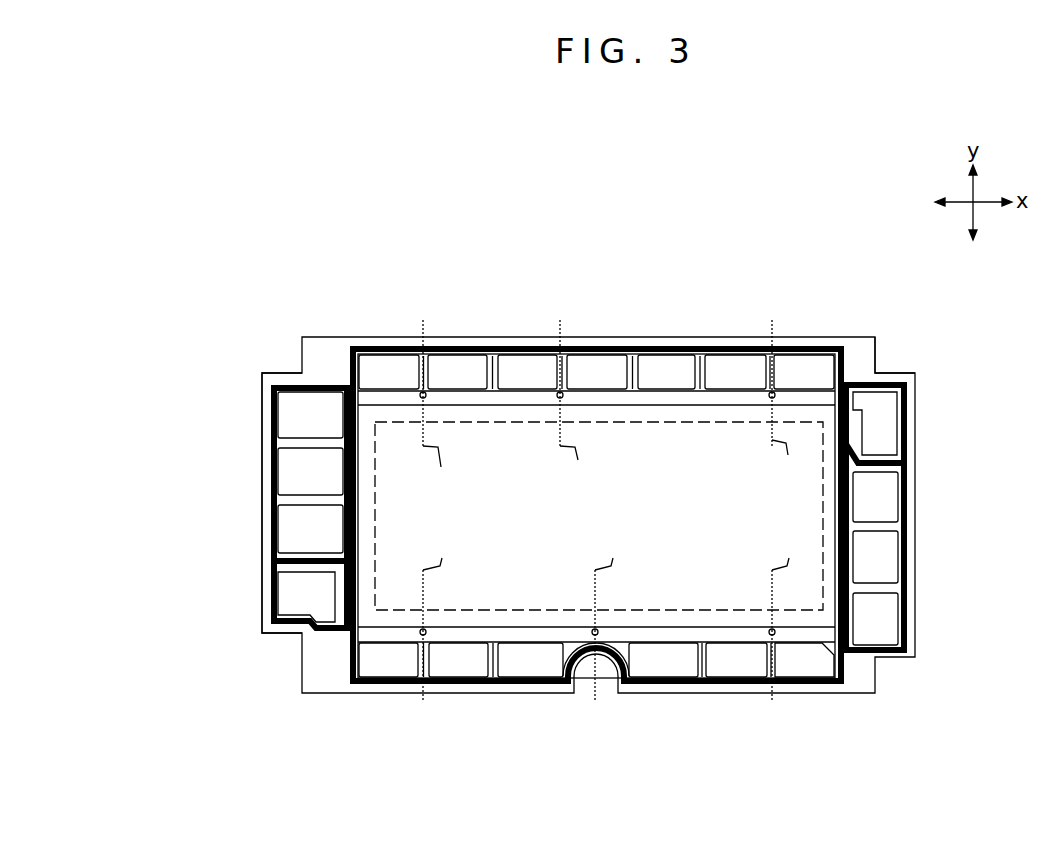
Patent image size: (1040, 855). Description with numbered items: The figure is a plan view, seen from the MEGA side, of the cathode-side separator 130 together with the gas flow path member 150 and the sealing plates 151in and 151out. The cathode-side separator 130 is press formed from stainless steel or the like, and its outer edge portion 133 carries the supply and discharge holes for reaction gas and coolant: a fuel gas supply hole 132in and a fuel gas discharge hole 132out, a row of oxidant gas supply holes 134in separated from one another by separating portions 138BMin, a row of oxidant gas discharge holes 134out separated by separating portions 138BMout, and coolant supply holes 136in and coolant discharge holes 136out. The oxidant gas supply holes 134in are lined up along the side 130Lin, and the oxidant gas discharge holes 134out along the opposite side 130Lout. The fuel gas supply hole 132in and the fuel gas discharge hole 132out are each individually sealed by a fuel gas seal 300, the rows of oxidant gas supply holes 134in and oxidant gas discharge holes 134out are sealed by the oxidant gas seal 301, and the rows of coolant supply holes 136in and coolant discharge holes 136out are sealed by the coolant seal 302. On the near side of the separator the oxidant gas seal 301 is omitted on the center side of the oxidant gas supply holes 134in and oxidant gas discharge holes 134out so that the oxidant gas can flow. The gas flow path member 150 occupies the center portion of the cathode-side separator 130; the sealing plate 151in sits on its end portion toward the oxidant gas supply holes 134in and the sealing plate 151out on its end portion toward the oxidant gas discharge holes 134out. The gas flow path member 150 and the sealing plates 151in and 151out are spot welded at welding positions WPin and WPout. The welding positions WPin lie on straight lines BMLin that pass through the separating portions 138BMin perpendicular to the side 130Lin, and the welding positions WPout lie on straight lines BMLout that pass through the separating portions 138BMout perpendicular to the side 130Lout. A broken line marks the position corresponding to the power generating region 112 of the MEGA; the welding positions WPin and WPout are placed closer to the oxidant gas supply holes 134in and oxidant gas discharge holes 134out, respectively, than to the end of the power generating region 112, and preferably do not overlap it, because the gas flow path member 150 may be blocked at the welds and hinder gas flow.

The cathode-side separator 130 is at (380, 166).
The oxidant gas seal 301 is at (440, 337).
The coolant seal 302 is at (302, 372).
The fuel gas seal 300 is at (267, 634).
The side 130Lout is at (780, 337).
The side 130Lin is at (853, 702).
The sealing plate 151out is at (866, 337).
The sealing plate 151in is at (848, 695).
The oxidant gas discharge holes 134out is at (376, 382).
The oxidant gas supply holes 134in is at (385, 675).
The separating portions 138BMout is at (430, 385).
The separating portions 138BMin is at (423, 680).
The welding positions WPout is at (557, 396).
The welding positions WPin is at (427, 634).
The straight lines BMLout is at (609, 469).
The straight lines BMLin is at (609, 553).
The gas flow path member 150 is at (897, 655).
The fuel gas supply hole 132in is at (885, 425).
The coolant supply holes 136in is at (880, 497).
The power generating region 112 is at (343, 660).
The coolant discharge holes 136out is at (300, 415).
The fuel gas discharge hole 132out is at (293, 588).
The outer edge portion 133 is at (320, 648).